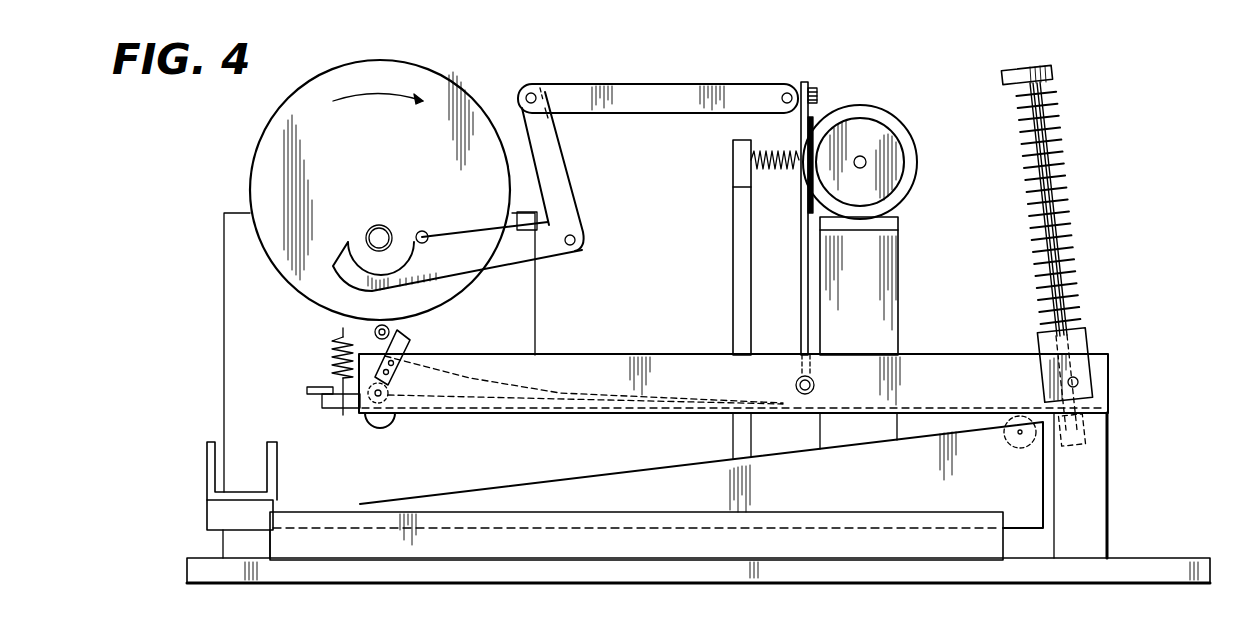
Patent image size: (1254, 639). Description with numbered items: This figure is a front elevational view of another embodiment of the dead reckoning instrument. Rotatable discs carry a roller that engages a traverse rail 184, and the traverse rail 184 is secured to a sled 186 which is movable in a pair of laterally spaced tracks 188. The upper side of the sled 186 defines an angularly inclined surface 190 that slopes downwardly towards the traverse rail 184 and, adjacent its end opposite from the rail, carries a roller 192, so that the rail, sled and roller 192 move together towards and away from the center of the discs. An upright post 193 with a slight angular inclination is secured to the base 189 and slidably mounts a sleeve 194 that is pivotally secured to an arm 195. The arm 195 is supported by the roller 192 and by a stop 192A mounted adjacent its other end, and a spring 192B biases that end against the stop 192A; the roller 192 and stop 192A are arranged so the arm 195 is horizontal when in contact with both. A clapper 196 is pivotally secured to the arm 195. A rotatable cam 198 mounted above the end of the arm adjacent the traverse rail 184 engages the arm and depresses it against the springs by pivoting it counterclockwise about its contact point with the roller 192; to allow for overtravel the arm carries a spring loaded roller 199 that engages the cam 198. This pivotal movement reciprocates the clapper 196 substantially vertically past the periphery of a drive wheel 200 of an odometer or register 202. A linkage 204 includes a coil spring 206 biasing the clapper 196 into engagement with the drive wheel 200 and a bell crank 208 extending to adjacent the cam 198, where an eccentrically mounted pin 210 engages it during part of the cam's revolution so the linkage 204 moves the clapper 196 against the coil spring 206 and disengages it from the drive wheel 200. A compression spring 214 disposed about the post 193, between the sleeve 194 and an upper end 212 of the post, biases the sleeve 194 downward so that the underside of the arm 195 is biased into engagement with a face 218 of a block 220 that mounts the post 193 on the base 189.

The traverse rail 184 is at (207, 443).
The sled 186 is at (333, 510).
The tracks 188 is at (938, 486).
The base 189 is at (400, 573).
The angularly inclined surface 190 is at (666, 466).
The roller 192 is at (1004, 423).
The stop 192A is at (316, 388).
The spring 192B is at (338, 332).
The upright post 193 is at (1063, 222).
The sleeve 194 is at (1092, 346).
The arm 195 is at (905, 353).
The clapper 196 is at (815, 268).
The rotatable cam 198 is at (275, 132).
The spring loaded roller 199 is at (402, 332).
The drive wheel 200 is at (904, 166).
The odometer or register 202 is at (900, 114).
The linkage 204 is at (600, 205).
The coil spring 206 is at (753, 176).
The bell crank 208 is at (560, 190).
The eccentrically mounted pin 210 is at (428, 232).
The upper end of the post 212 is at (1055, 74).
The compression spring 214 is at (1060, 147).
The face of the block 218 is at (1100, 408).
The block 220 is at (1100, 507).